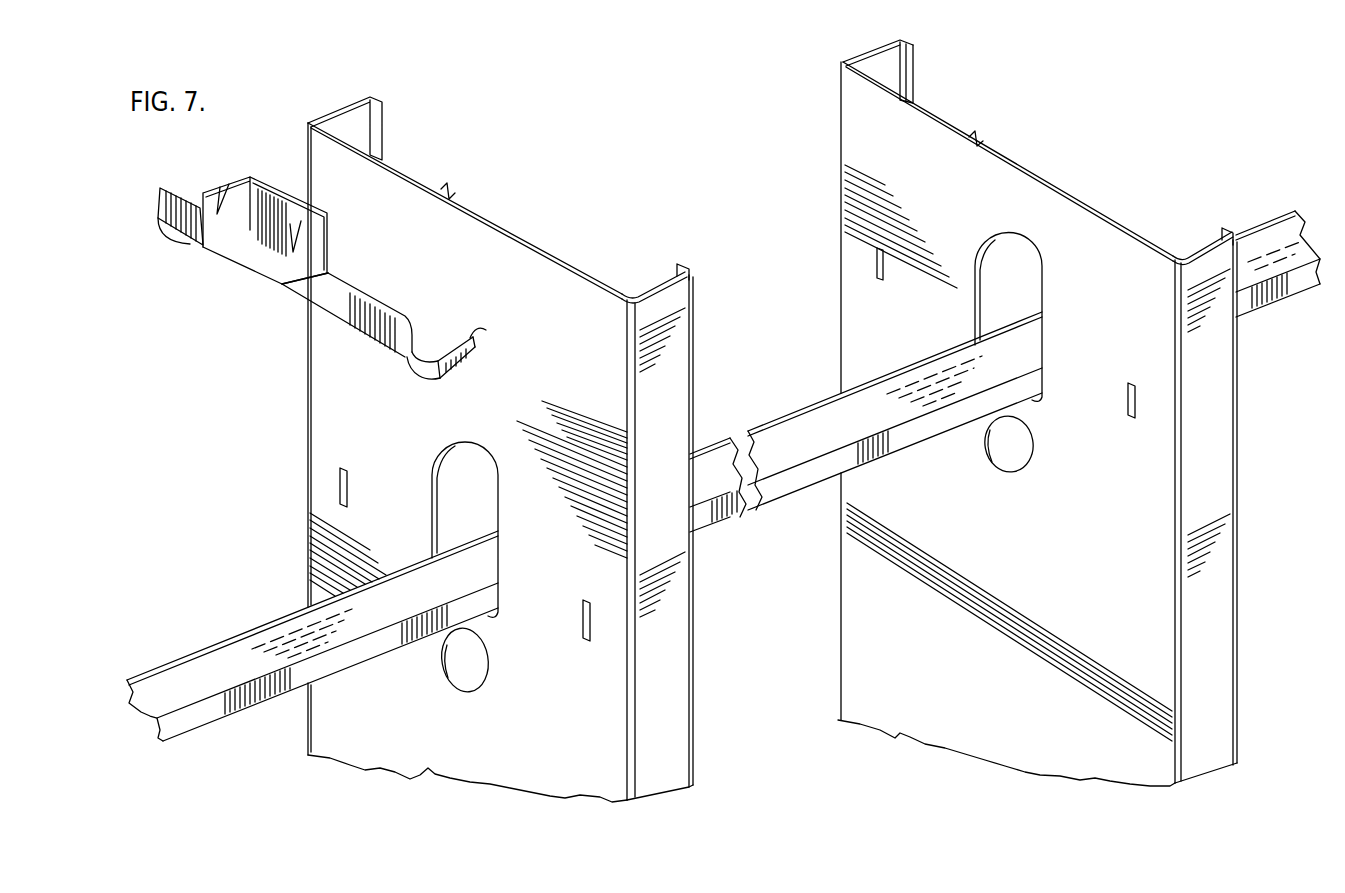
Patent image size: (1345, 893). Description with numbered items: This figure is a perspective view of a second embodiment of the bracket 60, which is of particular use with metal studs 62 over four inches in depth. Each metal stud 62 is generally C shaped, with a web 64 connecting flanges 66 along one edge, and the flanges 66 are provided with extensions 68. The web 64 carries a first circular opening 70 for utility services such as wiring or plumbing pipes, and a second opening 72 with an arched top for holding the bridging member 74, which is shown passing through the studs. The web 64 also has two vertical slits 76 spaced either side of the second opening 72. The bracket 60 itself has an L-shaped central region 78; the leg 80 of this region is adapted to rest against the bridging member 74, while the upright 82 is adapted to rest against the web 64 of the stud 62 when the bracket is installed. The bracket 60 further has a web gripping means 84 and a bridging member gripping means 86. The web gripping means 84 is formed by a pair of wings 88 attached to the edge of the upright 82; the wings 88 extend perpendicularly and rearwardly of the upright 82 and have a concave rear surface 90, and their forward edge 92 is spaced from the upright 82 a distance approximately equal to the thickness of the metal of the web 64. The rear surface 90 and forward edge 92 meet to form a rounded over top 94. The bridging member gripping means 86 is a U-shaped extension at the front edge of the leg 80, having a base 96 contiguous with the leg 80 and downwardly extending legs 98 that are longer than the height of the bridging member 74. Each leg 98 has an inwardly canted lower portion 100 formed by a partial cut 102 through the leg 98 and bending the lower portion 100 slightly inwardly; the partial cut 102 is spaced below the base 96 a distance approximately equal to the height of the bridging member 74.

The bracket 60 is at (315, 296).
The metal stud 62 is at (1044, 405).
The web 64 is at (1120, 243).
The flanges 66 is at (868, 52).
The extensions 68 is at (905, 70).
The first circular opening 70 is at (1018, 457).
The second opening 72 is at (1016, 262).
The bridging member 74 is at (805, 420).
The vertical slits 76 is at (1135, 400).
The L-shaped central region 78 is at (467, 361).
The leg 80 is at (328, 337).
The upright 82 is at (420, 340).
The web gripping means 84 is at (512, 337).
The bridging member gripping means 86 is at (299, 204).
The wings 88 is at (420, 377).
The concave rear surface 90 is at (440, 383).
The forward edge 92 is at (482, 333).
The rounded over top 94 is at (476, 350).
The base 96 is at (272, 206).
The downwardly extending legs 98 is at (300, 265).
The inwardly canted lower portion 100 is at (203, 222).
The partial cut 102 is at (223, 190).